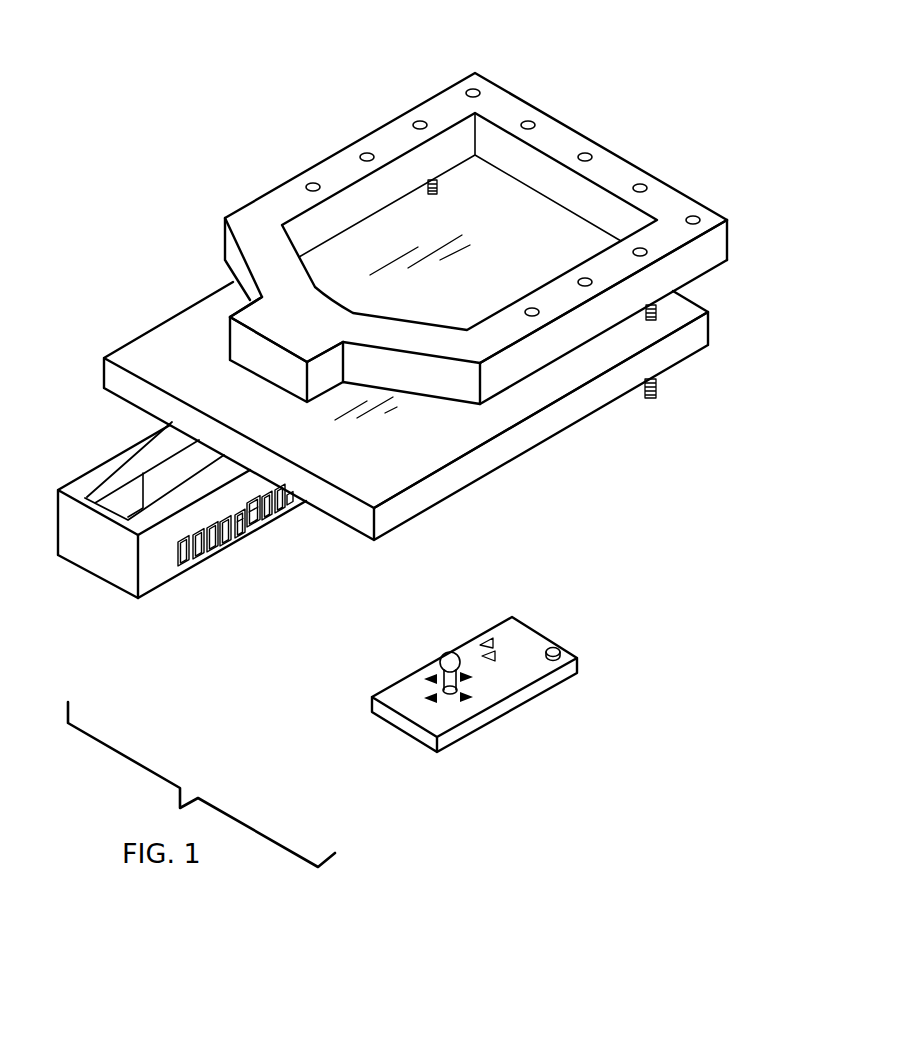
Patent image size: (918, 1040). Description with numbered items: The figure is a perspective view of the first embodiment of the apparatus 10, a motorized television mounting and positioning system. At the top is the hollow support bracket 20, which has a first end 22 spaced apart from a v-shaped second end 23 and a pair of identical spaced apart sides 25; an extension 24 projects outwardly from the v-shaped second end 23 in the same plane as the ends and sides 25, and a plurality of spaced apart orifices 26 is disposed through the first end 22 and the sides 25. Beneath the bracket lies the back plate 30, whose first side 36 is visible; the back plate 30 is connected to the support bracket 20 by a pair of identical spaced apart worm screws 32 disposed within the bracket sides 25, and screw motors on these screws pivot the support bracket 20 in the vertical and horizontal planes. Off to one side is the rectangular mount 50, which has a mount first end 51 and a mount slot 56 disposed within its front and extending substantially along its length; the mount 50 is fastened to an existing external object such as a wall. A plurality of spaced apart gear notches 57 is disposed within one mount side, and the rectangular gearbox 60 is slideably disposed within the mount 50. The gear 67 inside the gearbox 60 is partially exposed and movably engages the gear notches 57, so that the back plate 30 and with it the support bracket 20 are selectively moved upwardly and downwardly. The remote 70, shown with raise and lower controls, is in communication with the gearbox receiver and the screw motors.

The apparatus 10 is at (373, 100).
The hollow support bracket 20 is at (540, 96).
The first end 22 is at (733, 230).
The v-shaped second end 23 is at (433, 412).
The extension 24 is at (237, 338).
The sides 25 is at (330, 165).
The orifices 26 is at (471, 90).
The back plate 30 is at (478, 462).
The worm screws 32 is at (437, 190).
The first side 36 is at (570, 382).
The rectangular mount 50 is at (166, 598).
The mount first end 51 is at (110, 565).
The mount slot 56 is at (105, 477).
The gear notches 57 is at (222, 543).
The rectangular gearbox 60 is at (185, 462).
The gear 67 is at (258, 520).
The remote 70 is at (540, 642).